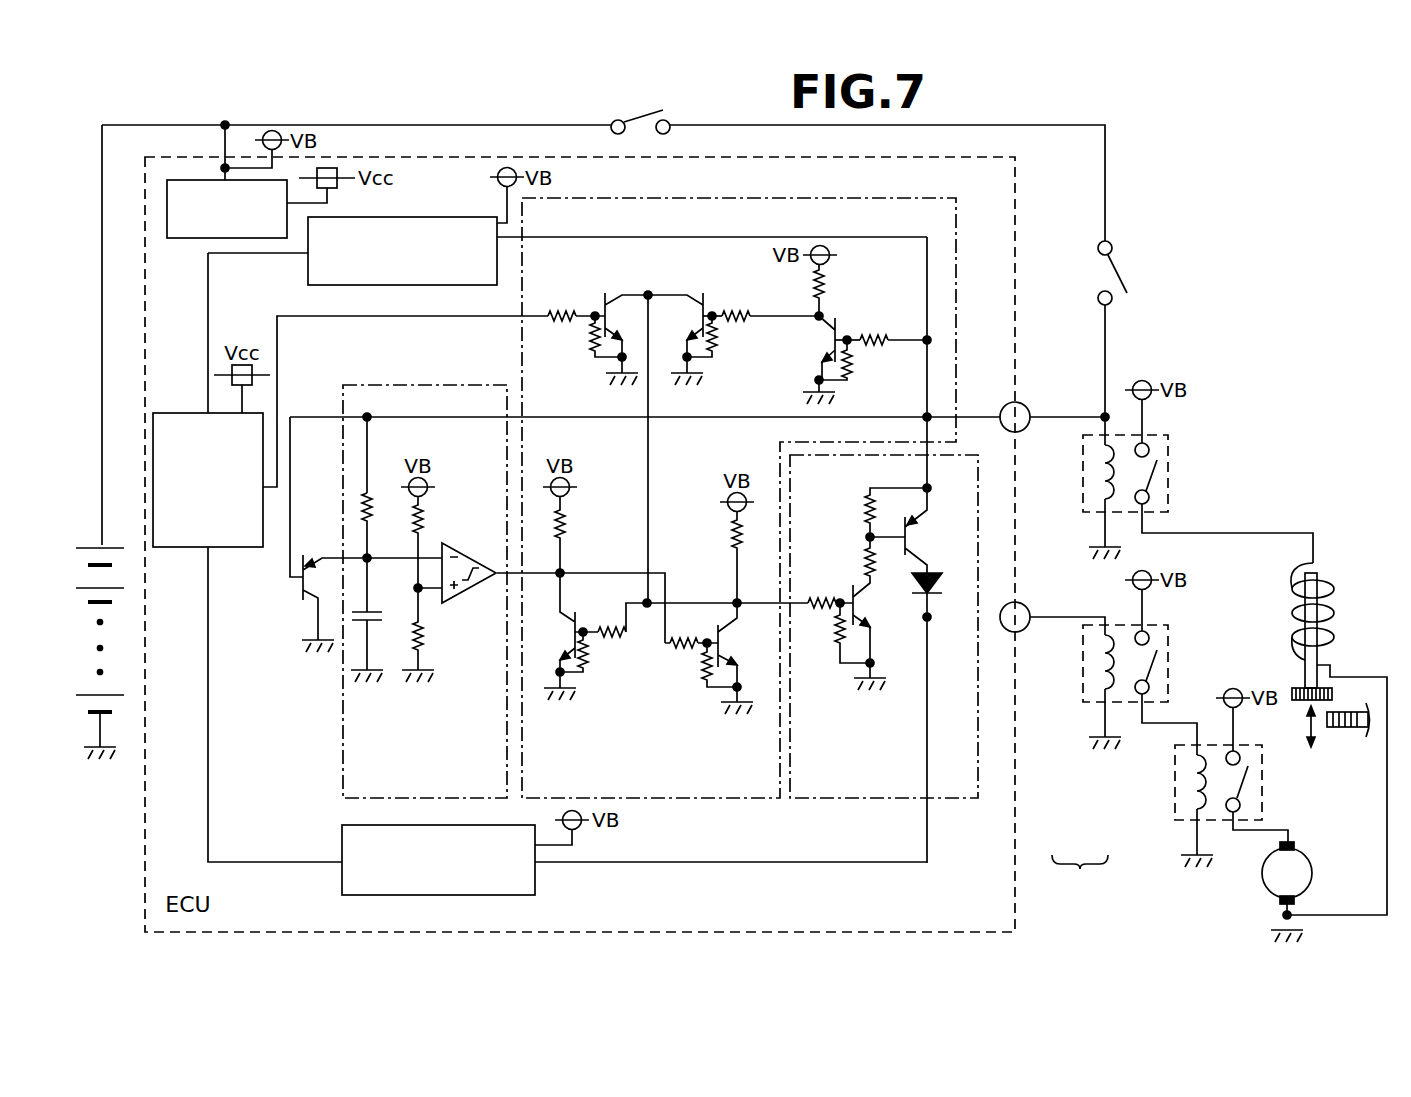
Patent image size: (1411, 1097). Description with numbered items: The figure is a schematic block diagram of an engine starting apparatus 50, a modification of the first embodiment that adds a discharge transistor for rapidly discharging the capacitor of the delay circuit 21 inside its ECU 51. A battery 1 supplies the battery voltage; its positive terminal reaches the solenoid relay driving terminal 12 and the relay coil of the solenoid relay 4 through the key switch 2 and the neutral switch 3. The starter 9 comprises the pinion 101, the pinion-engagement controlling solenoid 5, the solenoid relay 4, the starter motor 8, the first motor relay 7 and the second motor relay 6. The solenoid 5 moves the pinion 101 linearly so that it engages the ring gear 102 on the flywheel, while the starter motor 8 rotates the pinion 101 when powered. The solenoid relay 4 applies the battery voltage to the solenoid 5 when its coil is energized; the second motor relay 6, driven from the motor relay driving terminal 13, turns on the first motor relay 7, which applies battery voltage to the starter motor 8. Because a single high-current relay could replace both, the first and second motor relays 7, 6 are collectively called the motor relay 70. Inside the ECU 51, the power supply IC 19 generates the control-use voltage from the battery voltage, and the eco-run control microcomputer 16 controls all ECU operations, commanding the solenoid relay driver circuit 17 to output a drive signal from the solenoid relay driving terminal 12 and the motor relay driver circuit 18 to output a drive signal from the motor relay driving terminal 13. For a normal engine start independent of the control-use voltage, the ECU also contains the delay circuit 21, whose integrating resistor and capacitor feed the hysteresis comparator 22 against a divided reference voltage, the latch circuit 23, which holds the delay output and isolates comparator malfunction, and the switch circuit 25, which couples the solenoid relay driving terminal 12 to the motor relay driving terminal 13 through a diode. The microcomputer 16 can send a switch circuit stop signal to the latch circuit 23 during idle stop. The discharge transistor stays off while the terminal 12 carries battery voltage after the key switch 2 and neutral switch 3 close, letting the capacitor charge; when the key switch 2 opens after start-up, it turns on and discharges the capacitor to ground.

The battery 1 is at (95, 545).
The key switch 2 is at (640, 120).
The neutral switch 3 is at (1120, 272).
The solenoid relay 4 is at (1138, 497).
The pinion-engagement controlling solenoid 5 is at (1320, 586).
The second motor relay 6 is at (1132, 741).
The first motor relay 7 is at (1205, 806).
The starter motor 8 is at (1262, 886).
The starter 9 is at (1271, 457).
The solenoid relay driving terminal 12 is at (1027, 406).
The motor relay driving terminal 13 is at (1030, 605).
The eco-run control microcomputer 16 is at (190, 413).
The solenoid relay driver circuit 17 is at (447, 217).
The motor relay driver circuit 18 is at (535, 880).
The power supply IC 19 is at (195, 238).
The delay circuit 21 is at (343, 783).
The comparator 22 is at (478, 556).
The latch circuit 23 is at (653, 800).
The switch circuit 25 is at (807, 800).
The engine starting apparatus 50 is at (1239, 207).
The ECU 51 is at (1015, 157).
The motor relay 70 is at (1080, 876).
The pinion 101 is at (1295, 687).
The ring gear 102 is at (1352, 728).